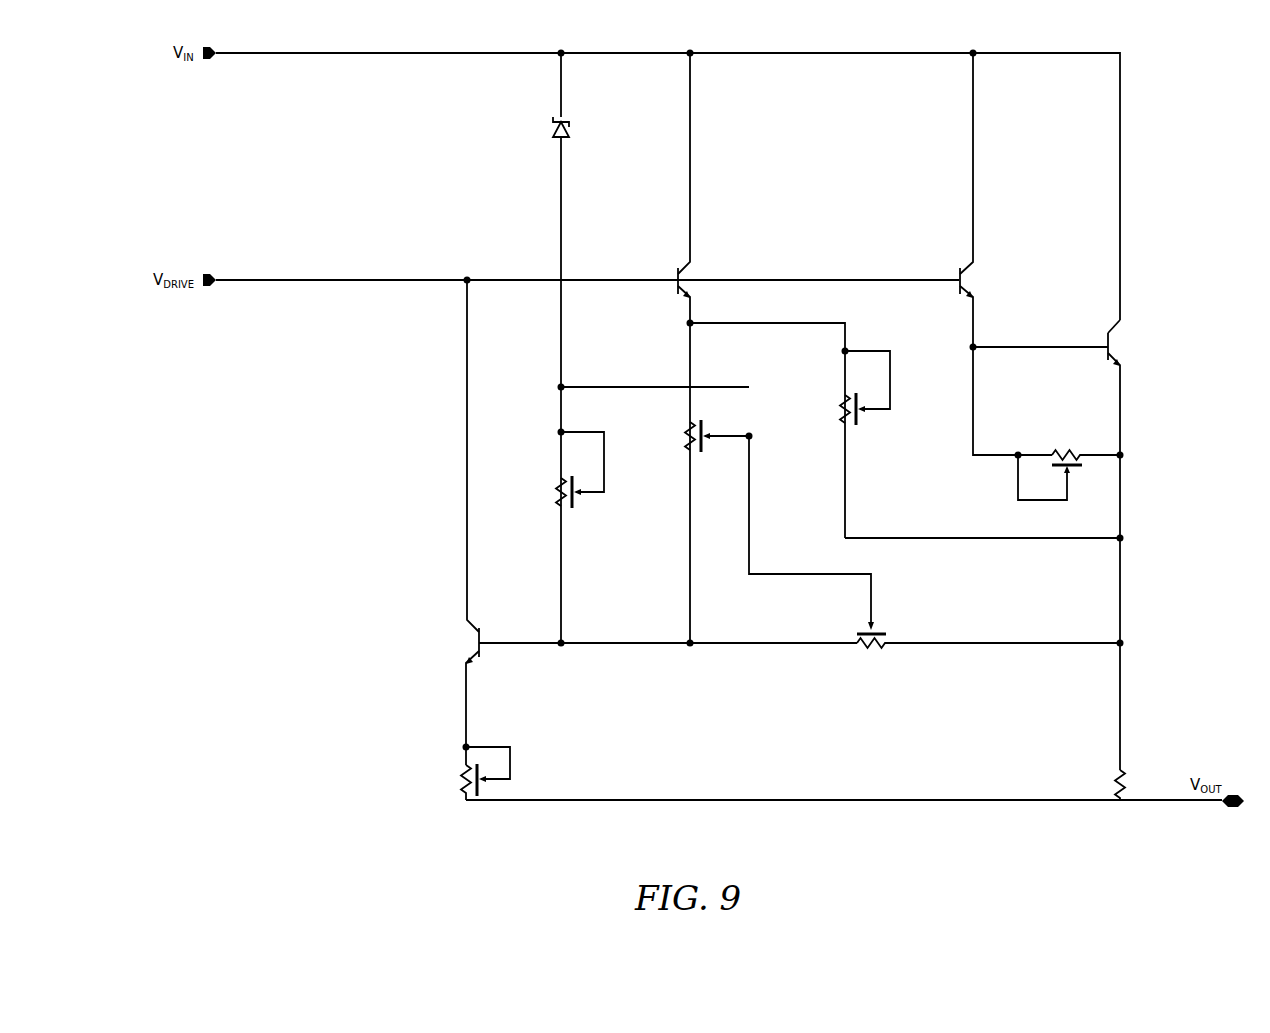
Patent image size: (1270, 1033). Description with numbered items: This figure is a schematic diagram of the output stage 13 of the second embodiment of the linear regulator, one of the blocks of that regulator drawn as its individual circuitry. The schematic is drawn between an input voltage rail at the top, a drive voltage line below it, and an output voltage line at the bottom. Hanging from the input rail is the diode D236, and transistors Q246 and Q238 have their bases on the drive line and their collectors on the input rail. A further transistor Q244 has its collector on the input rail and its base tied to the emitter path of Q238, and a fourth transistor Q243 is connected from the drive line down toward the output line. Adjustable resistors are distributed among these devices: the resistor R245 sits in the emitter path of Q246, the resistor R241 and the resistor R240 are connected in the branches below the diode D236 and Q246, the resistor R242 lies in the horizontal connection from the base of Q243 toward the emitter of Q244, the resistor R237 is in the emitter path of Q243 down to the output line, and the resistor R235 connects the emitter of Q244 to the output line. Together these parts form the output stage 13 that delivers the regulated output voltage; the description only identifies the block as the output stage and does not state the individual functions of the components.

The output stage 13 is at (439, 39).
The zener diode D236 is at (534, 348).
The transistor Q246 is at (668, 348).
The transistor Q238 is at (990, 254).
The transistor Q244 is at (1046, 539).
The transistor Q243 is at (661, 522).
The potentiometer resistor R245 is at (790, 430).
The potentiometer resistor R241 is at (655, 419).
The potentiometer resistor R240 is at (555, 470).
The potentiometer resistor R242 is at (934, 558).
The potentiometer resistor R237 is at (462, 773).
The resistor R235 is at (1095, 785).